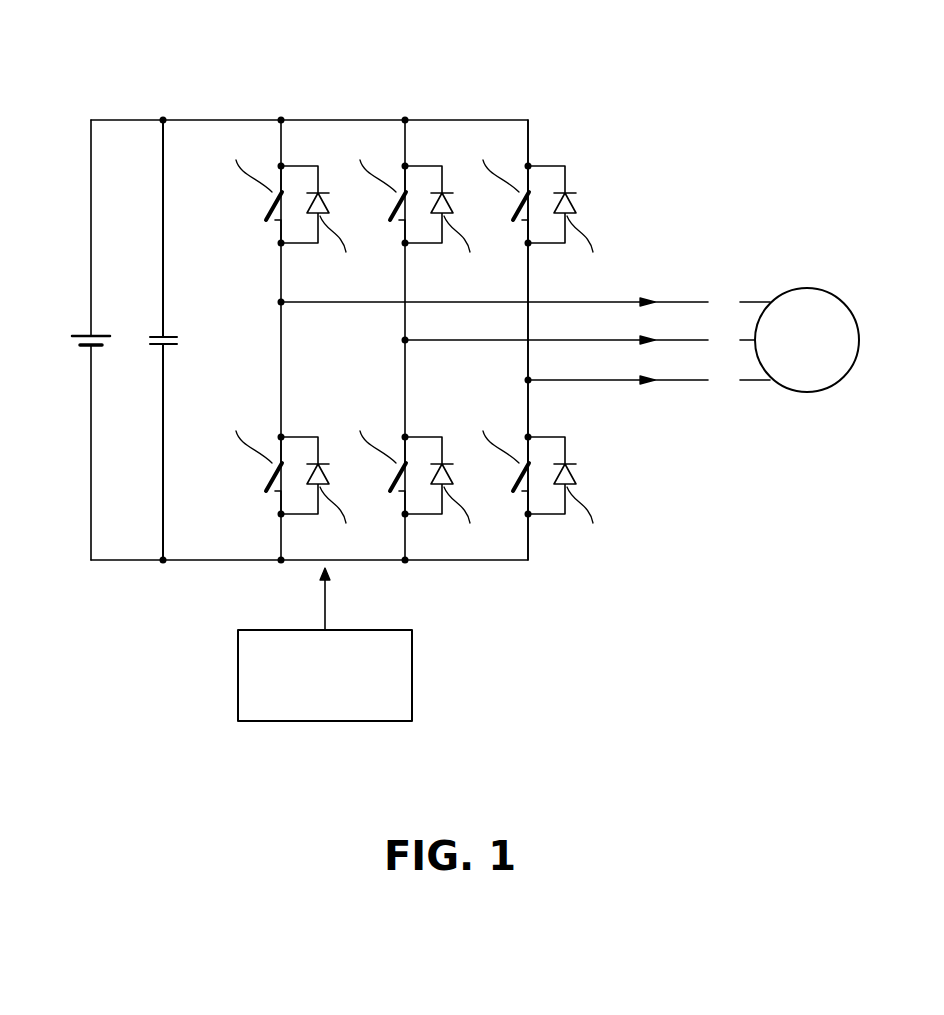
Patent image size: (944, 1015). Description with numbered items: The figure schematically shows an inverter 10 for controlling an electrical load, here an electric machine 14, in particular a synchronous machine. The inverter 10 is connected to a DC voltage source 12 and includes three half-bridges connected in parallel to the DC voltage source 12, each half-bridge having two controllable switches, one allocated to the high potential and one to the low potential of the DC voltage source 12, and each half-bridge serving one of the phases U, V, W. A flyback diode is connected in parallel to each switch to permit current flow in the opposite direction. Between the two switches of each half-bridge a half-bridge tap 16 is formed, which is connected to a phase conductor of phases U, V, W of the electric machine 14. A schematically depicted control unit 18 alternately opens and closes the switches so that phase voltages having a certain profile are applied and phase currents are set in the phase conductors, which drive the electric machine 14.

The inverter 10 is at (660, 105).
The DC voltage source 12 is at (82, 336).
The electric machine 14 is at (805, 288).
The half-bridge tap 16 is at (281, 302).
The control unit 18 is at (328, 722).